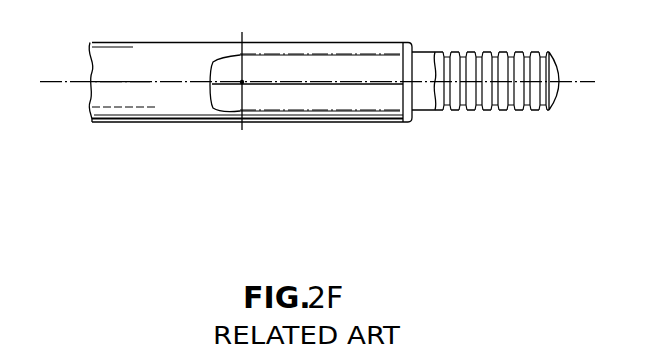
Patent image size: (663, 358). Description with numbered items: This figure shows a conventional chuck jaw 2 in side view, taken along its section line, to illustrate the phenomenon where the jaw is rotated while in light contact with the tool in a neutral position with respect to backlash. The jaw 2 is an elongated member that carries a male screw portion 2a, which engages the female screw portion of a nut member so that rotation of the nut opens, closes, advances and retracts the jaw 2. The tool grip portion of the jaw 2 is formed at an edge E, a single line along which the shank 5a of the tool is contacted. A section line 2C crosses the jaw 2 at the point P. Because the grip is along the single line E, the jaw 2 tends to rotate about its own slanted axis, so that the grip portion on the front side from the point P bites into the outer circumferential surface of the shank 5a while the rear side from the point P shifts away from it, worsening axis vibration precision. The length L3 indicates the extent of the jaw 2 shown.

The jaw 2 is at (213, 97).
The male screw portion 2a is at (508, 112).
The line 2C is at (242, 69).
The shank 5a is at (402, 125).
The edge E is at (288, 84).
The point P is at (242, 83).
The axis L3 is at (117, 83).